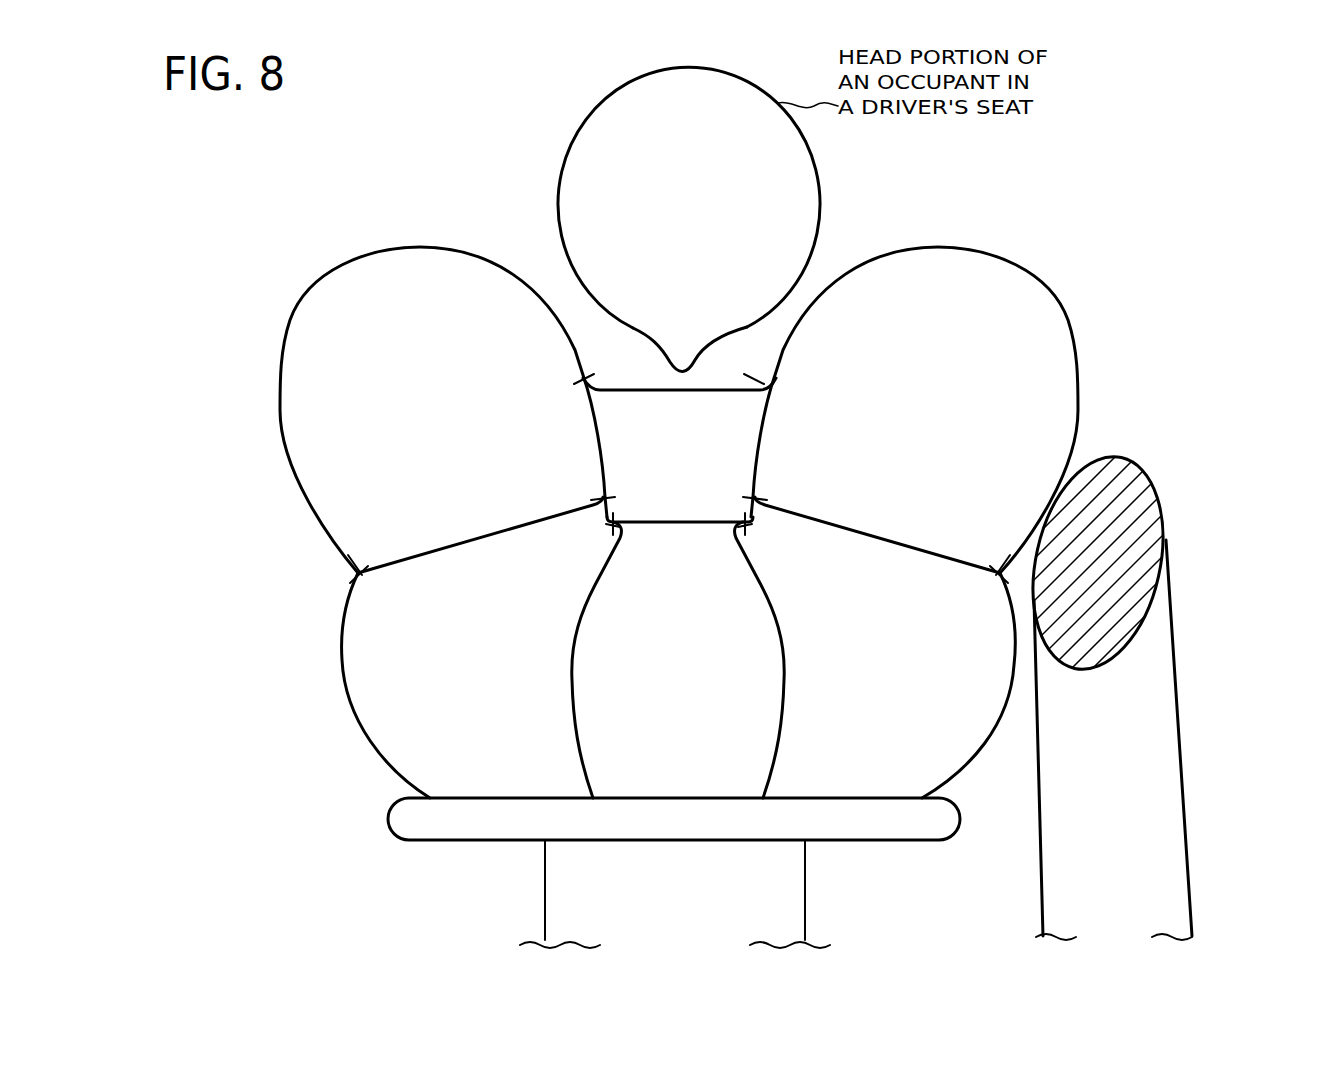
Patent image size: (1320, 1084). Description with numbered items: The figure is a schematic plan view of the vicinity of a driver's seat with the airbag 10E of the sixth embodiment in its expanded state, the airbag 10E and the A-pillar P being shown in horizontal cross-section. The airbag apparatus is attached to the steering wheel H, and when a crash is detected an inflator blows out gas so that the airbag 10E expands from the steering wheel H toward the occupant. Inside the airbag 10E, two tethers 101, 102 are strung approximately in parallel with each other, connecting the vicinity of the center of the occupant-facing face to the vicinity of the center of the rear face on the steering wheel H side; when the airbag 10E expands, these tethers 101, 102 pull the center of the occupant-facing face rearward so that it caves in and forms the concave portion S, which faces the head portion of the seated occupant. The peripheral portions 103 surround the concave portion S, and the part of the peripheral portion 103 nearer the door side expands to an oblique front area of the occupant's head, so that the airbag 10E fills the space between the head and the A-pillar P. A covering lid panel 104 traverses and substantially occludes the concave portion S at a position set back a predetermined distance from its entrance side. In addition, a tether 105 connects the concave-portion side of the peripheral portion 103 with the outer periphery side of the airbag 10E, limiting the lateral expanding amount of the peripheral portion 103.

The airbag 10E is at (1097, 328).
The tether 101 is at (572, 688).
The tether 102 is at (787, 702).
The peripheral portion 103 is at (523, 227).
The covering lid panel 104 is at (738, 393).
The tether 105 is at (463, 540).
The concave portion S is at (694, 492).
The steering wheel H is at (388, 830).
The A-pillar P is at (1180, 729).